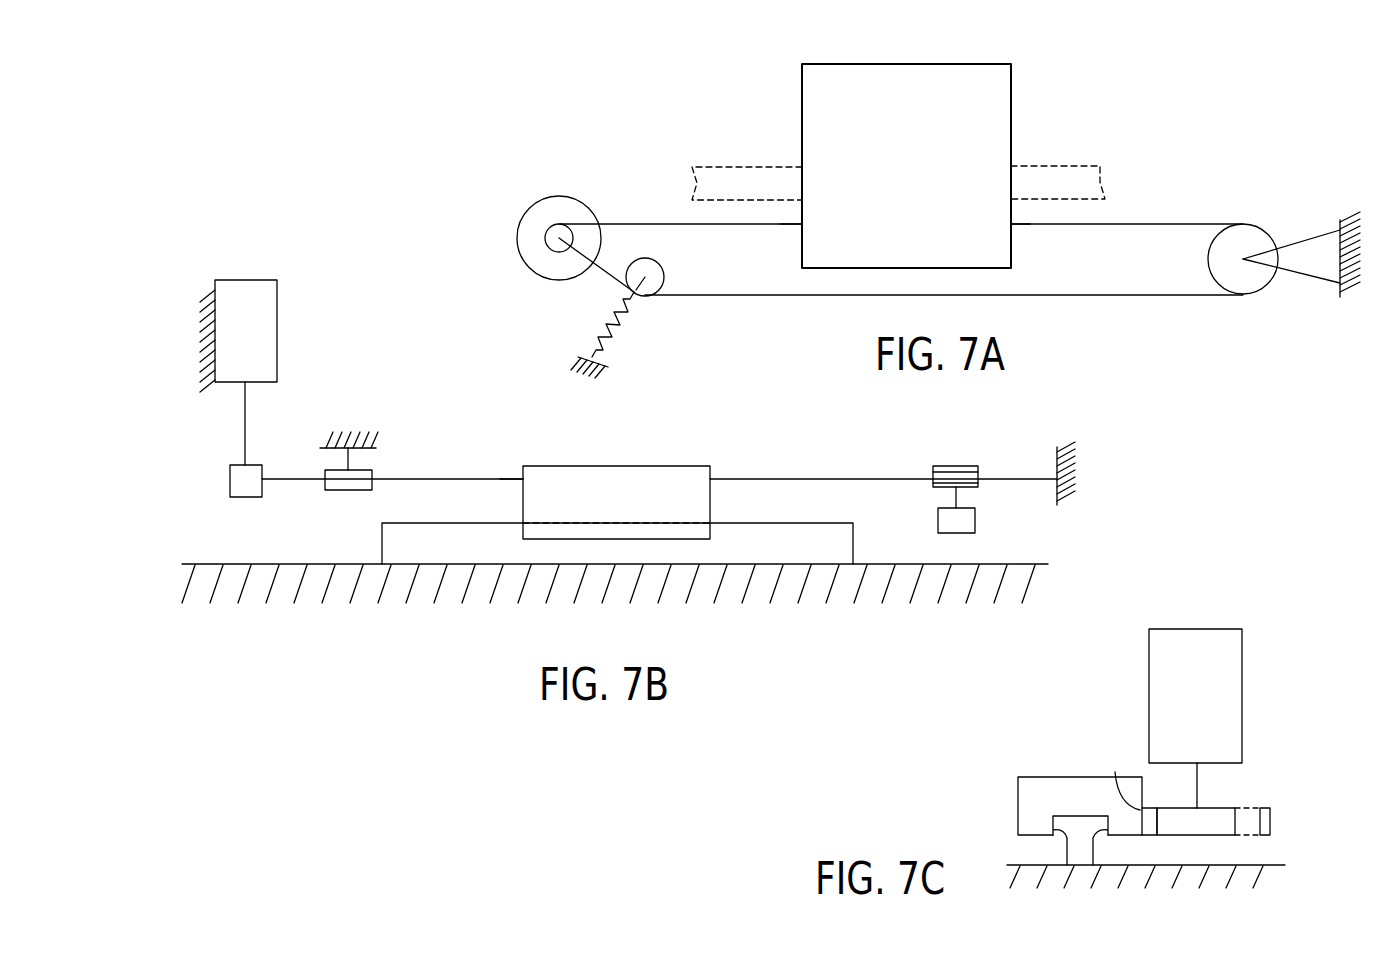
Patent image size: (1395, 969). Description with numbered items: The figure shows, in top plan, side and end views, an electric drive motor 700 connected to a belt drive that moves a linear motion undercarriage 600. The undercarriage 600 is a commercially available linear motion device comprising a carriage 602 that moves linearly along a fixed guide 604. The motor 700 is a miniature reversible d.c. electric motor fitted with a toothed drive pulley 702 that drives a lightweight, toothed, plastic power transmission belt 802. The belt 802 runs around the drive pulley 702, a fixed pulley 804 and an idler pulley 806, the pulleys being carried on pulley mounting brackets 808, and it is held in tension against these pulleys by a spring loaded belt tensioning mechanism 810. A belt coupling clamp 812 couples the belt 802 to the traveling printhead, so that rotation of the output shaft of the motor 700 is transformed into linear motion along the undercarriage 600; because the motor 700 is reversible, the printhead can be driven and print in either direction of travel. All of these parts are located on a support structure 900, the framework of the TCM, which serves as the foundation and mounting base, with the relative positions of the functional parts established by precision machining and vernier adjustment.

In FIG. 7A, the linear motion undercarriage 600 is at (886, 150).
In FIG. 7B, the linear motion undercarriage 600 is at (722, 432).
In FIG. 7C, the linear motion undercarriage 600 is at (1075, 705).
In FIG. 7A, the carriage 602 is at (974, 64).
In FIG. 7B, the carriage 602 is at (597, 480).
In FIG. 7C, the carriage 602 is at (1038, 785).
In FIG. 7A, the fixed guide 604 is at (1064, 180).
In FIG. 7B, the fixed guide 604 is at (460, 550).
In FIG. 7C, the fixed guide 604 is at (1100, 842).
In FIG. 7A, the electric drive motor 700 is at (550, 193).
In FIG. 7B, the electric drive motor 700 is at (265, 320).
In FIG. 7C, the electric drive motor 700 is at (1213, 640).
In FIG. 7A, the toothed drive pulley 702 is at (545, 239).
In FIG. 7B, the toothed drive pulley 702 is at (220, 478).
In FIG. 7C, the toothed drive pulley 702 is at (1215, 815).
In FIG. 7A, the power transmission belt 802 is at (745, 297).
In FIG. 7C, the power transmission belt 802 is at (1272, 826).
In FIG. 7A, the fixed pulley 804 is at (1250, 236).
In FIG. 7B, the fixed pulley 804 is at (948, 465).
In FIG. 7A, the idler pulley 806 is at (664, 274).
In FIG. 7A, the pulley mounting brackets 808 is at (1330, 258).
In FIG. 7B, the pulley mounting brackets 808 is at (1068, 463).
In FIG. 7A, the spring loaded belt tensioning mechanism 810 is at (614, 299).
In FIG. 7B, the spring loaded belt tensioning mechanism 810 is at (350, 440).
In FIG. 7A, the belt coupling clamp 812 is at (800, 229).
In FIG. 7B, the belt coupling clamp 812 is at (523, 470).
In FIG. 7C, the belt coupling clamp 812 is at (1117, 776).
In FIG. 7B, the support structure 900 is at (204, 355).